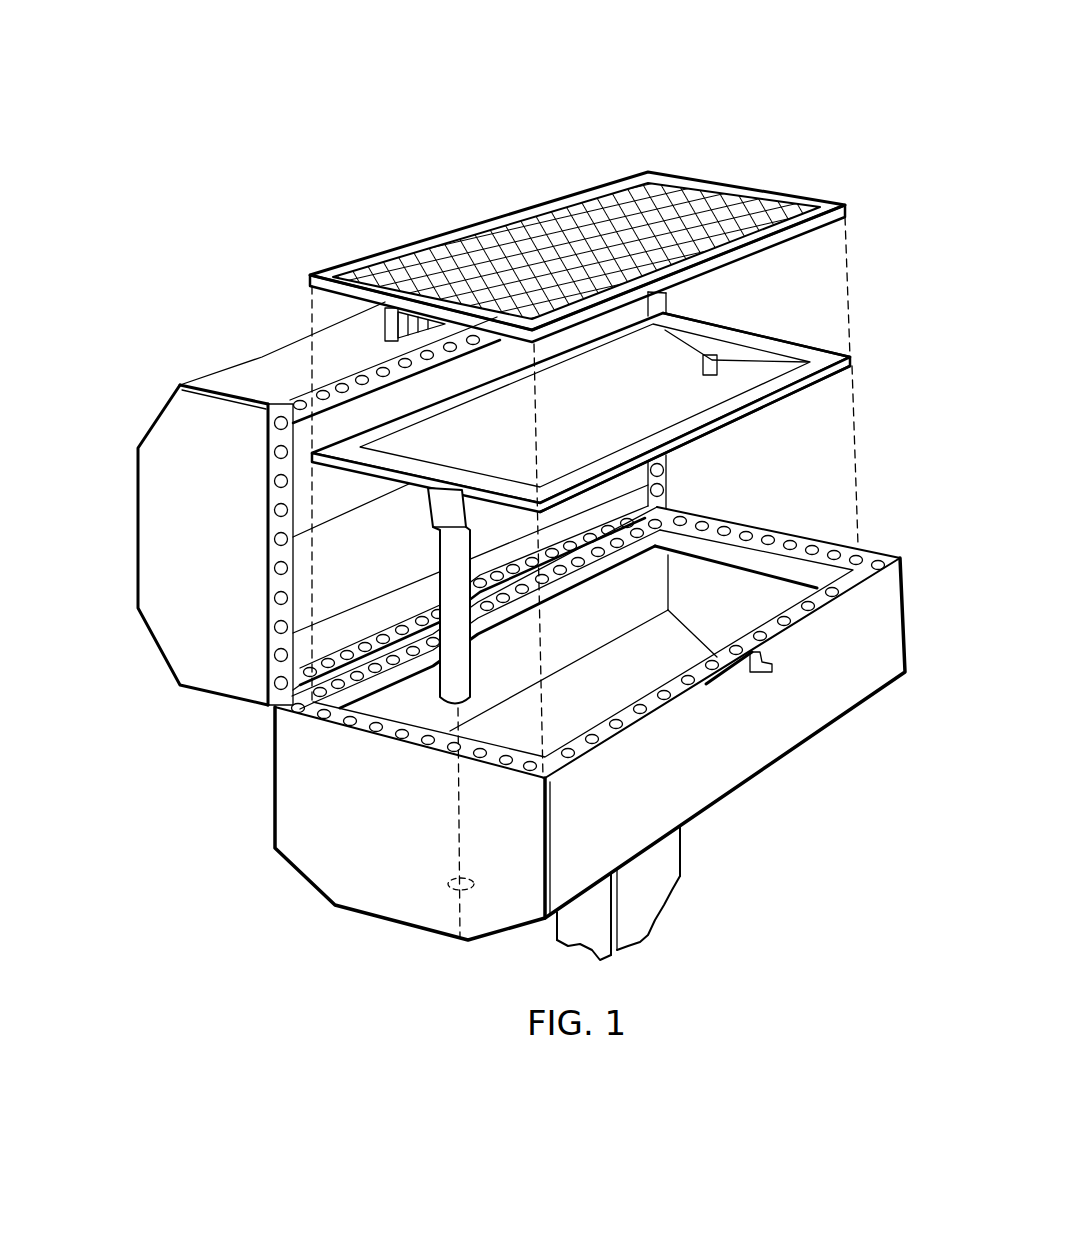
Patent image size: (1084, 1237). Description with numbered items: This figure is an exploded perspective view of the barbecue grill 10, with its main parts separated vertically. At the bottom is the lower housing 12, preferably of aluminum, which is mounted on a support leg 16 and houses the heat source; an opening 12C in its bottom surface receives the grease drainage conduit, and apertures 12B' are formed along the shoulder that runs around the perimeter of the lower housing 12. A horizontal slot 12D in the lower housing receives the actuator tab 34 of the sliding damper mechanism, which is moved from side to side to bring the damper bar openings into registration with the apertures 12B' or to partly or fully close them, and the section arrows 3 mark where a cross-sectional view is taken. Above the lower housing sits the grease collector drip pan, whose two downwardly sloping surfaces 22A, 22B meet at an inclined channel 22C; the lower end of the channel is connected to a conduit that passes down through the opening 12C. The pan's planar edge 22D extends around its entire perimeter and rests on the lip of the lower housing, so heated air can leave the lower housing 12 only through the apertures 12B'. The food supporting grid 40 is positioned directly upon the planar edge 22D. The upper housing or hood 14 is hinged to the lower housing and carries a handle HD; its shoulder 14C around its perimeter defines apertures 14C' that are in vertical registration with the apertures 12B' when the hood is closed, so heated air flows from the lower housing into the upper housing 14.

The barbecue grill 10 is at (222, 70).
The food supporting grid 40 is at (763, 188).
The upper housing 14 is at (196, 522).
The shoulder 14C is at (419, 527).
The apertures 14C' is at (469, 513).
The handle HD is at (384, 330).
The downwardly sloping surface 22A is at (587, 417).
The downwardly sloping surface 22B is at (664, 418).
The inclined channel 22C is at (705, 368).
The planar edge 22D is at (762, 330).
The lower housing 12 is at (402, 840).
The apertures 12B' is at (589, 628).
The opening 12C is at (448, 885).
The horizontal slot 12D is at (722, 680).
The section line 3- 3 is at (704, 672).
The actuator tab 34 is at (770, 672).
The support leg 16 is at (683, 870).